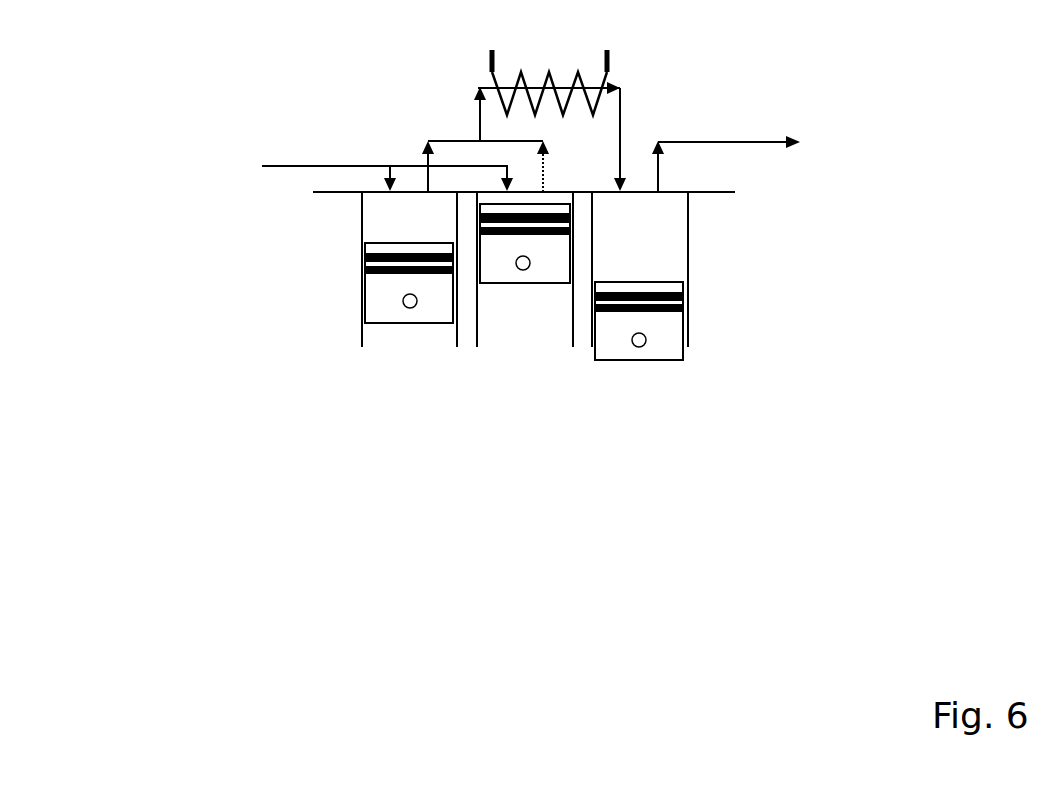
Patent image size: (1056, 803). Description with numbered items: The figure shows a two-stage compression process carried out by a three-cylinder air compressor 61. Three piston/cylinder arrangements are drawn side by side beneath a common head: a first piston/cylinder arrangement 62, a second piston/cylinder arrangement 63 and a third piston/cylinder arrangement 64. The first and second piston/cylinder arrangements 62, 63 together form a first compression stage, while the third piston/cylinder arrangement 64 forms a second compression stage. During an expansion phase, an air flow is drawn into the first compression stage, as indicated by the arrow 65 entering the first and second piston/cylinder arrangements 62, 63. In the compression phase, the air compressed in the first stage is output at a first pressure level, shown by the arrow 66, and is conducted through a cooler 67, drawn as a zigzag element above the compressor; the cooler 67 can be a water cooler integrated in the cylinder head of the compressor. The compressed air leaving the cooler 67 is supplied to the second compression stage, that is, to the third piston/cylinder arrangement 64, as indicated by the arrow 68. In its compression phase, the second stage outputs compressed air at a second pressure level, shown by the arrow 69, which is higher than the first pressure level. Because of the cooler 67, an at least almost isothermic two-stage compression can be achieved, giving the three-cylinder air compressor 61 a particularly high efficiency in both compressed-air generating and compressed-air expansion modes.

The three-cylinder air compressor 61 is at (304, 259).
The first piston/cylinder arrangement 62 is at (410, 385).
The second piston/cylinder arrangement 63 is at (525, 385).
The third piston/cylinder arrangement 64 is at (639, 385).
The arrow indicating air flow drawn into first compression stage 65 is at (280, 164).
The arrow indicating compressed air output at first pressure level 66 is at (428, 139).
The cooler 67 is at (608, 66).
The arrow indicating compressed air supplied to second compression stage 68 is at (621, 110).
The arrow indicating compressed air output at second pressure level 69 is at (728, 140).